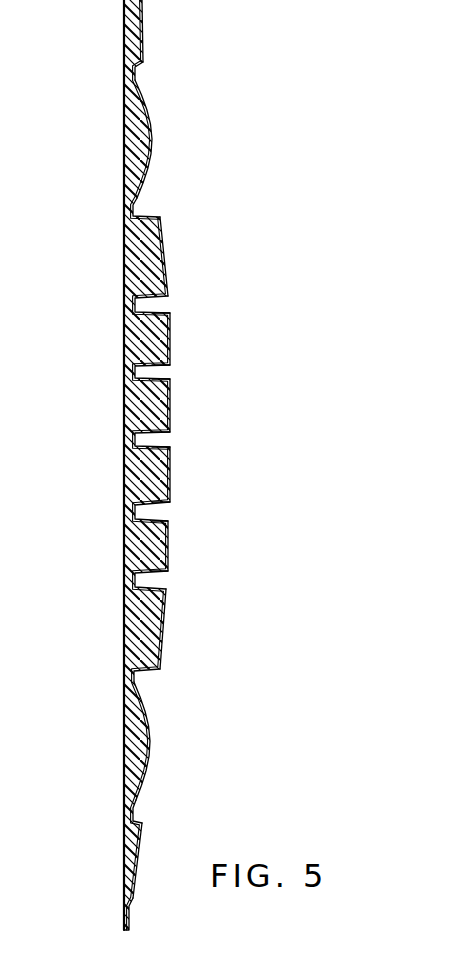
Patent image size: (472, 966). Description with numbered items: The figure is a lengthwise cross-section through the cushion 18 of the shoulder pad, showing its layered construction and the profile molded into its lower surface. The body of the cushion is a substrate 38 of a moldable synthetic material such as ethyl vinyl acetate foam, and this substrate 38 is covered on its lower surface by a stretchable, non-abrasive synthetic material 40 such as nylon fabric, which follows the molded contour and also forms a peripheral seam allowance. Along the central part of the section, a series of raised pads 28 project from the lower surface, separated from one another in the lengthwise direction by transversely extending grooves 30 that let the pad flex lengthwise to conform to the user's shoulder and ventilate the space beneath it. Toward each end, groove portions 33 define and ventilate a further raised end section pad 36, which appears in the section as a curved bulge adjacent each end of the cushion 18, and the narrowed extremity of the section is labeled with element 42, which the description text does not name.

The cushion 18 is at (232, 233).
The raised pads 28 is at (172, 339).
The transversely extending grooves 30 is at (148, 305).
The portions 33 is at (143, 73).
The raised end section pad 36 is at (153, 145).
The substrate 38 is at (133, 632).
The stretchable synthetic material 40 is at (142, 848).
The tip 42 is at (127, 917).